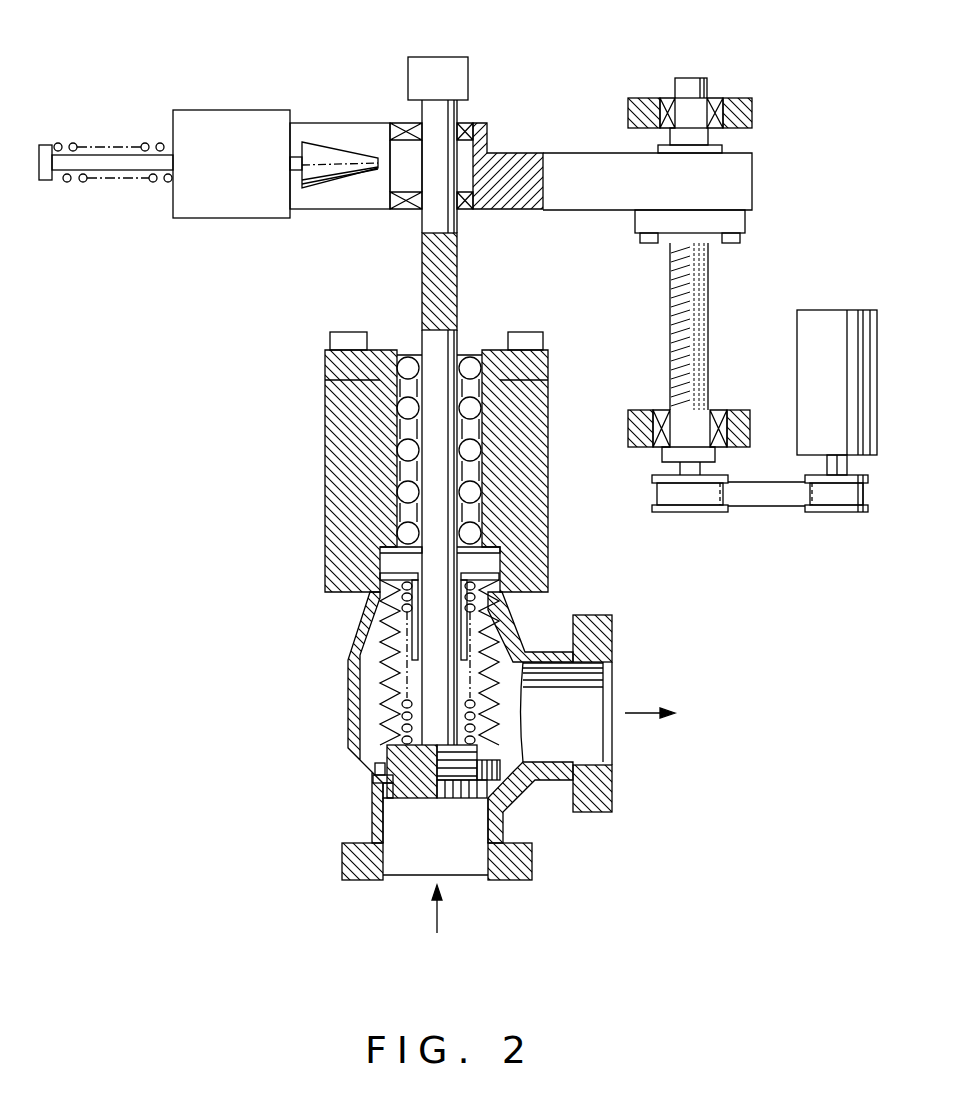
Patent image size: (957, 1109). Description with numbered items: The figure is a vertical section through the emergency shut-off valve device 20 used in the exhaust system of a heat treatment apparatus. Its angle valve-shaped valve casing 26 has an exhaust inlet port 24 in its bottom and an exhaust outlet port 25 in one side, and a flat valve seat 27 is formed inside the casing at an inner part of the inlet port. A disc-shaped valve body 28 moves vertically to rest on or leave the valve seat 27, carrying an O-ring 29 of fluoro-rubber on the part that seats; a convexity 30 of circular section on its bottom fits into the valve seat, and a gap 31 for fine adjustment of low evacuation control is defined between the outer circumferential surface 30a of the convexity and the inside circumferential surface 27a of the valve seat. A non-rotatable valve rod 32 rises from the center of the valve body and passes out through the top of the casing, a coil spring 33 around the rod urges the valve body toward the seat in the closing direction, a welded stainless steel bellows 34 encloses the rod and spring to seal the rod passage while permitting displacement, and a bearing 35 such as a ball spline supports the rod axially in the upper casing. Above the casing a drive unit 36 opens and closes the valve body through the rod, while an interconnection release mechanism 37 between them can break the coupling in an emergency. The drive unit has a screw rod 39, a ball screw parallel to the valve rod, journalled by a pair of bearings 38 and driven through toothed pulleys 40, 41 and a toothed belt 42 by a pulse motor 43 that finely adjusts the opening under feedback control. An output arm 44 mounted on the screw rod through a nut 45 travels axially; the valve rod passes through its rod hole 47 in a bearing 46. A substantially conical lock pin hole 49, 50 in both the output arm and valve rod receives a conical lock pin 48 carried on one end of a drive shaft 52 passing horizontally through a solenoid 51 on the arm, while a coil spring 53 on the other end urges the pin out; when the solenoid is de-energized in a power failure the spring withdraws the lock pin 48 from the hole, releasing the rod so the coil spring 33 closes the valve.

The valve device 20 is at (289, 376).
The exhaust inlet port 24 is at (450, 867).
The exhaust outlet port 25 is at (593, 733).
The valve casing 26 is at (328, 543).
The valve seat 27 is at (513, 772).
The inside circumferential surface of the valve seat 27a is at (400, 873).
The valve body 28 is at (390, 747).
The O-ring 29 is at (375, 772).
The convexity 30 is at (452, 795).
The outer circumferential surface of the convexity 30a is at (383, 787).
The gap 31 is at (393, 790).
The valve rod 32 is at (428, 468).
The coil spring 33 is at (392, 618).
The bellows 34 is at (388, 677).
The bearing 35 is at (463, 362).
The drive unit 36 is at (787, 76).
The interconnection release mechanism 37 is at (304, 72).
The bearings 38 is at (663, 102).
The screw rod 39 is at (672, 285).
The toothed pulley 40 is at (688, 512).
The toothed pulley 41 is at (838, 512).
The toothed belt 42 is at (763, 507).
The pulse motor 43 is at (827, 316).
The output arm 44 is at (577, 165).
The nut 45 is at (642, 222).
The bearing 46 is at (467, 122).
The rod hole 47 is at (447, 187).
The lock pin 48 is at (345, 150).
The lock pin hole 49 is at (395, 178).
The lock pin hole 50 is at (432, 293).
The solenoid 51 is at (213, 112).
The drive shaft 52 is at (122, 165).
The coil spring 53 is at (142, 143).